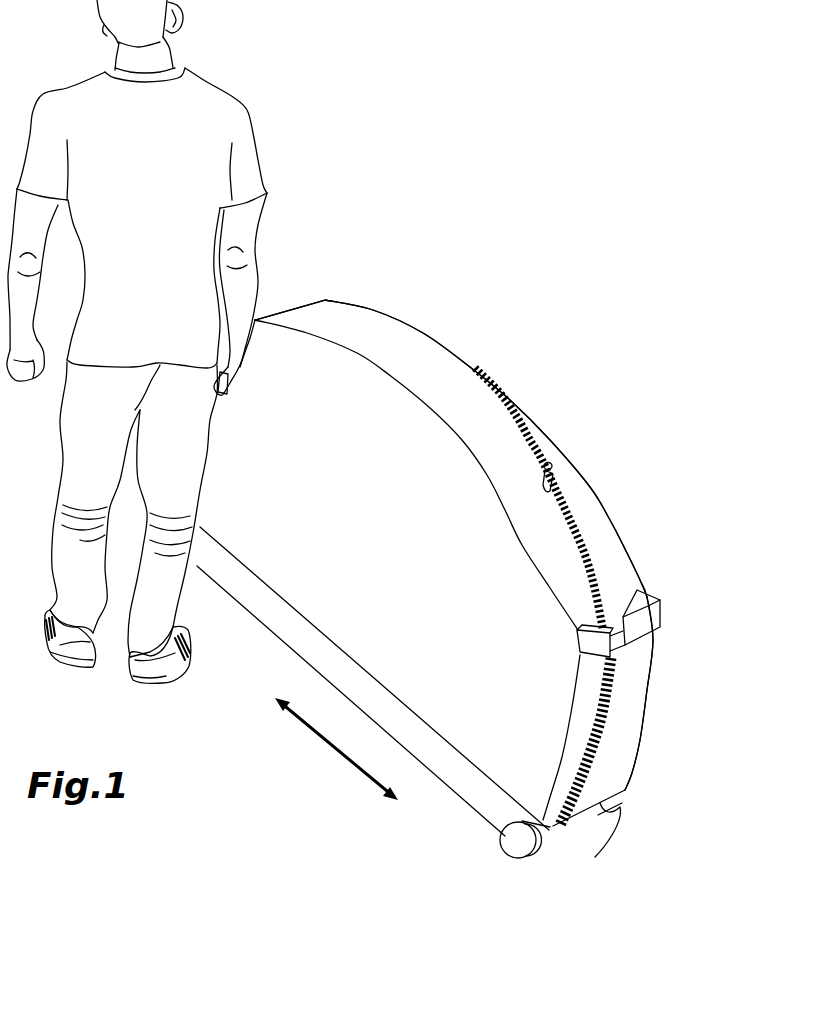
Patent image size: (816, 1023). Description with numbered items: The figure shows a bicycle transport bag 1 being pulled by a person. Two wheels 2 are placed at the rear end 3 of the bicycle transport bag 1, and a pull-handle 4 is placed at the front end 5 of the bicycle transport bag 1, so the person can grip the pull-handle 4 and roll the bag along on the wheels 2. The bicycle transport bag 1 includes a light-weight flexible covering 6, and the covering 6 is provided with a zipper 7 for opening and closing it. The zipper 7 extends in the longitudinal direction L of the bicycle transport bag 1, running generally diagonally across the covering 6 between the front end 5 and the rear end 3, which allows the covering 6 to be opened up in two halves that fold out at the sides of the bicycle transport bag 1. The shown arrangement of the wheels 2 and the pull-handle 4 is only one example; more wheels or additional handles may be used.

The bicycle transport bag 1 is at (514, 334).
The wheels 2 is at (527, 853).
The rear end 3 is at (660, 771).
The pull-handle 4 is at (229, 390).
The front end 5 is at (298, 296).
The covering 6 is at (608, 556).
The zipper 7 is at (567, 510).
The longitudinal direction L is at (339, 751).